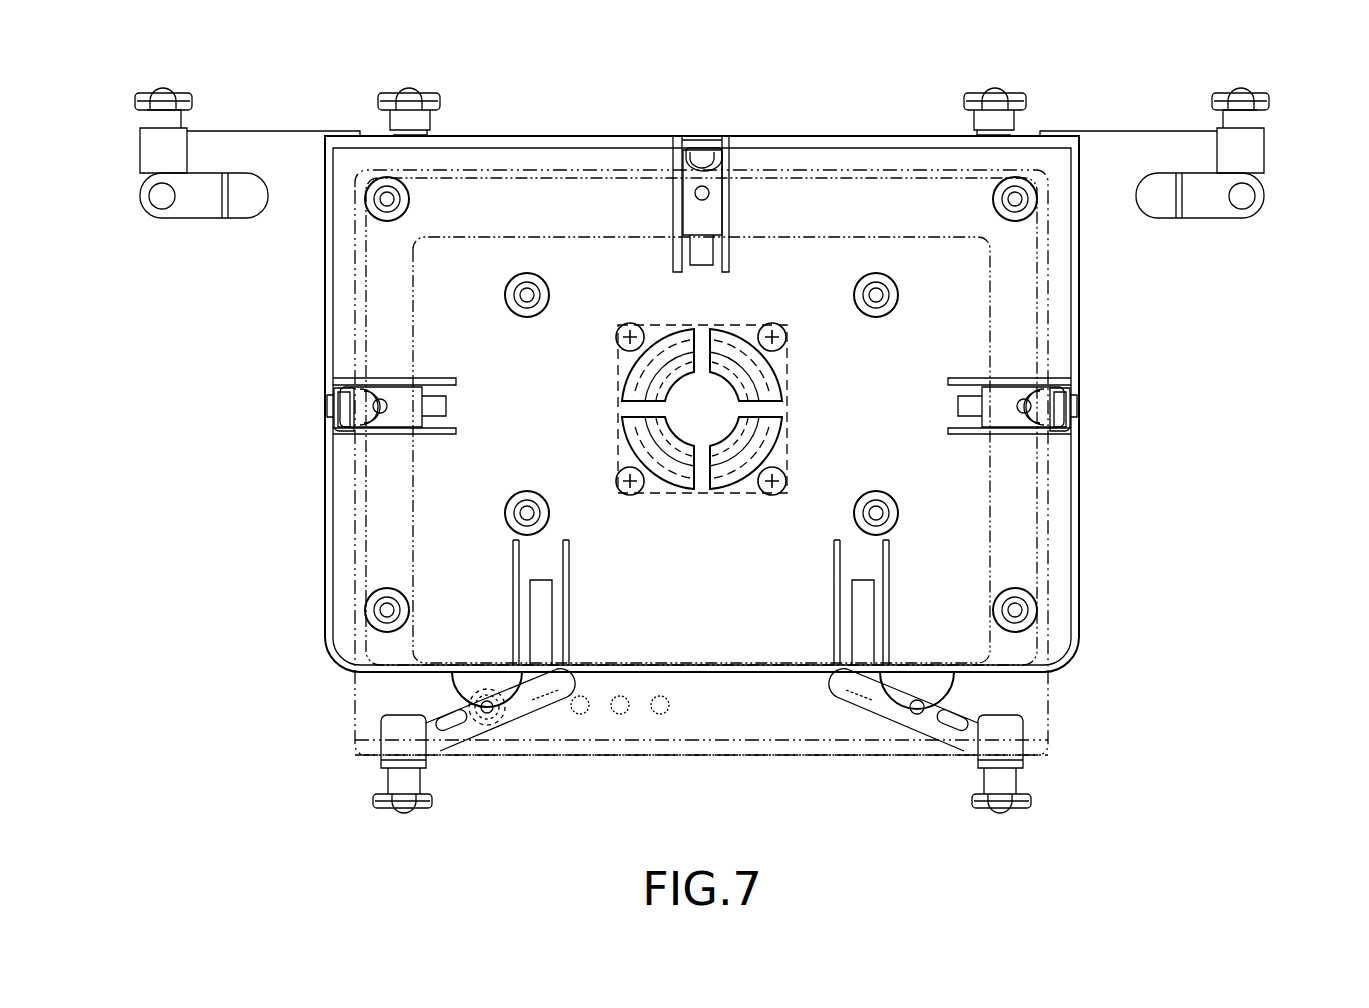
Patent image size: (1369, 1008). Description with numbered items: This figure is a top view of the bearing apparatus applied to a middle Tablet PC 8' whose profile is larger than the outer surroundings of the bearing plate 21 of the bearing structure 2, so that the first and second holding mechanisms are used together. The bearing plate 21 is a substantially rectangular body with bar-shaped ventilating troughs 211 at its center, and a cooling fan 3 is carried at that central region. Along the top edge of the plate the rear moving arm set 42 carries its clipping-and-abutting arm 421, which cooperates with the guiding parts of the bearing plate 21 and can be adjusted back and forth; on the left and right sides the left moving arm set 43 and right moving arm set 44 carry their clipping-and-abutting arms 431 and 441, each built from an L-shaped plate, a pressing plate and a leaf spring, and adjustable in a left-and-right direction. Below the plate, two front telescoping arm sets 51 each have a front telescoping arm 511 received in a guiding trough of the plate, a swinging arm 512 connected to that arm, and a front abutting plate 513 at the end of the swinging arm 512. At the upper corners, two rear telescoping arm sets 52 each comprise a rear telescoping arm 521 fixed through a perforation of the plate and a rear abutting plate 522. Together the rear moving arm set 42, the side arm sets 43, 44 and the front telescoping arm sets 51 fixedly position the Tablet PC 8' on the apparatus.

The bearing structure 2 is at (1090, 478).
The bearing plate 21 is at (1060, 533).
The ventilating troughs 211 is at (880, 297).
The cooling fan 3 is at (620, 455).
The rear moving arm set 42 is at (676, 192).
The clipping-and-abutting arm 421 is at (702, 165).
The left moving arm set 43 is at (380, 384).
The clipping-and-abutting arm 431 is at (333, 404).
The right moving arm set 44 is at (1024, 384).
The clipping-and-abutting arm 441 is at (1070, 404).
The front telescoping arm set 51 is at (362, 776).
The front telescoping arm 511 is at (455, 683).
The swinging arm 512 is at (468, 730).
The front abutting plate 513 is at (393, 733).
The rear telescoping arm set 52 is at (130, 198).
The rear telescoping arm 521 is at (294, 134).
The rear abutting plate 522 is at (190, 205).
The Tablet PC 8' is at (637, 775).